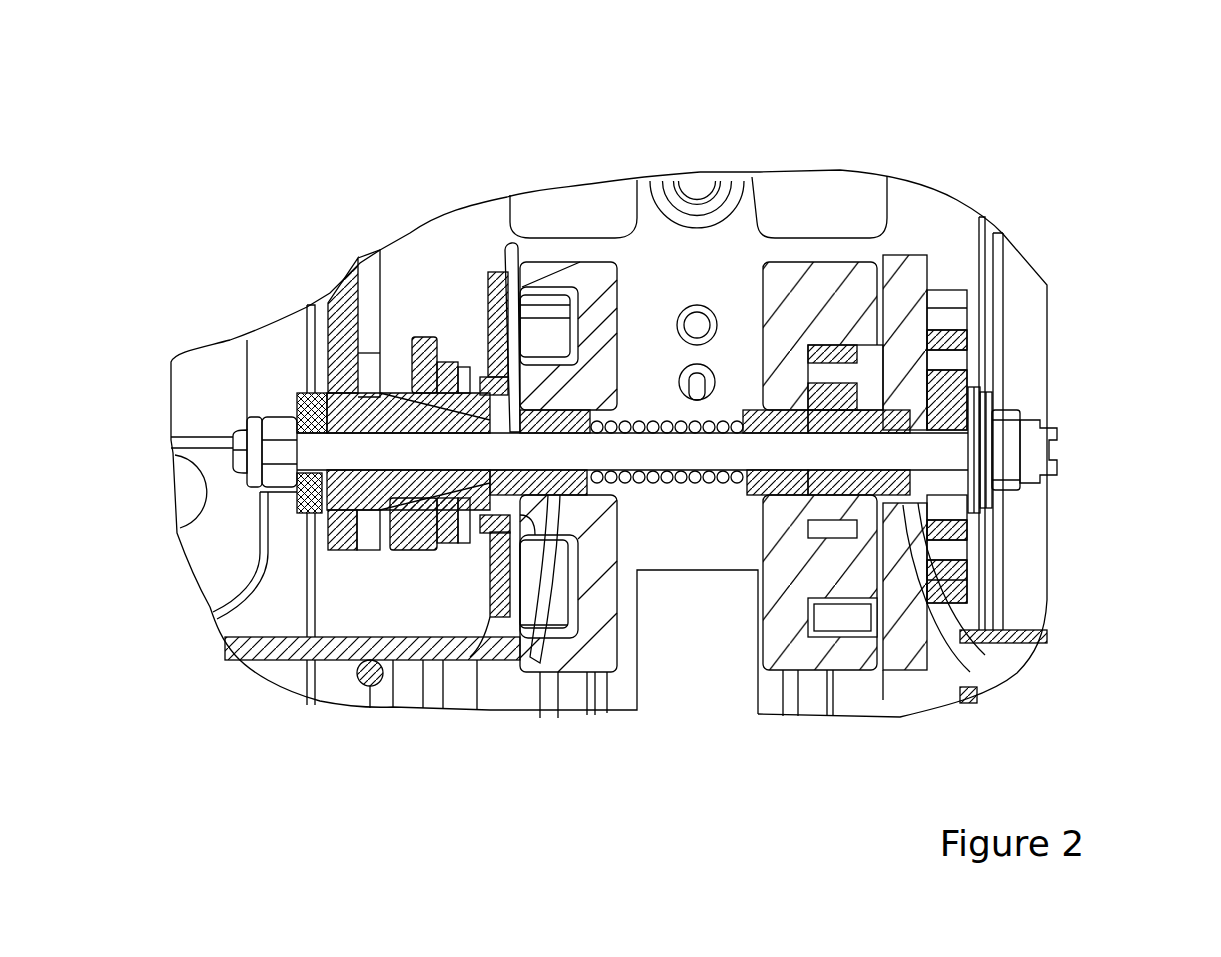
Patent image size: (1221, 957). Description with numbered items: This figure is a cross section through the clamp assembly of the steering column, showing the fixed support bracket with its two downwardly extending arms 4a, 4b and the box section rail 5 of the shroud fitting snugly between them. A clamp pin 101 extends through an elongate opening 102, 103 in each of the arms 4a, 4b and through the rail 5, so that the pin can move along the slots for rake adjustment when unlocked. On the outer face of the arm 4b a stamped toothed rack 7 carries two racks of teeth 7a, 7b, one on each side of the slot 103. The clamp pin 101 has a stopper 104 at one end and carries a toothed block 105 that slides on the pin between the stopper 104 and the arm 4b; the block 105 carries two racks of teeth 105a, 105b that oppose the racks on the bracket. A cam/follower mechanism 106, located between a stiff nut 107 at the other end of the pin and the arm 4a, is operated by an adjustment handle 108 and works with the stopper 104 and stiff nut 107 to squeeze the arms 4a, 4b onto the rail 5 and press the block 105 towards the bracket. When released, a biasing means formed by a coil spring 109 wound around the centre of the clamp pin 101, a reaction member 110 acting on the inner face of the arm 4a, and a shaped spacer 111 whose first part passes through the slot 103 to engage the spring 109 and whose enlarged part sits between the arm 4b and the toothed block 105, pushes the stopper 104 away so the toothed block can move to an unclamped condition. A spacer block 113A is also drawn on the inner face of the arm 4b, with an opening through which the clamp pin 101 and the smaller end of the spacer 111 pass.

The arm 4a is at (342, 648).
The arm 4b is at (895, 650).
The box section rail 5 is at (585, 700).
The toothed rack 7 is at (940, 345).
The rack of teeth 7a is at (960, 350).
The rack of teeth 7b is at (955, 545).
The clamp pin 101 is at (537, 700).
The elongate opening 102 is at (572, 452).
The elongate opening 103 is at (860, 470).
The stopper 104 is at (1020, 418).
The toothed block 105 is at (945, 548).
The rack of teeth 105a is at (965, 357).
The rack of teeth 105b is at (963, 540).
The cam/follower mechanism 106 is at (398, 345).
The stiff nut 107 is at (280, 417).
The adjustment handle 108 is at (330, 308).
The coil spring 109 is at (675, 480).
The reaction member 110 is at (568, 430).
The shaped spacer 111 is at (753, 490).
The inner collar 113A is at (856, 410).